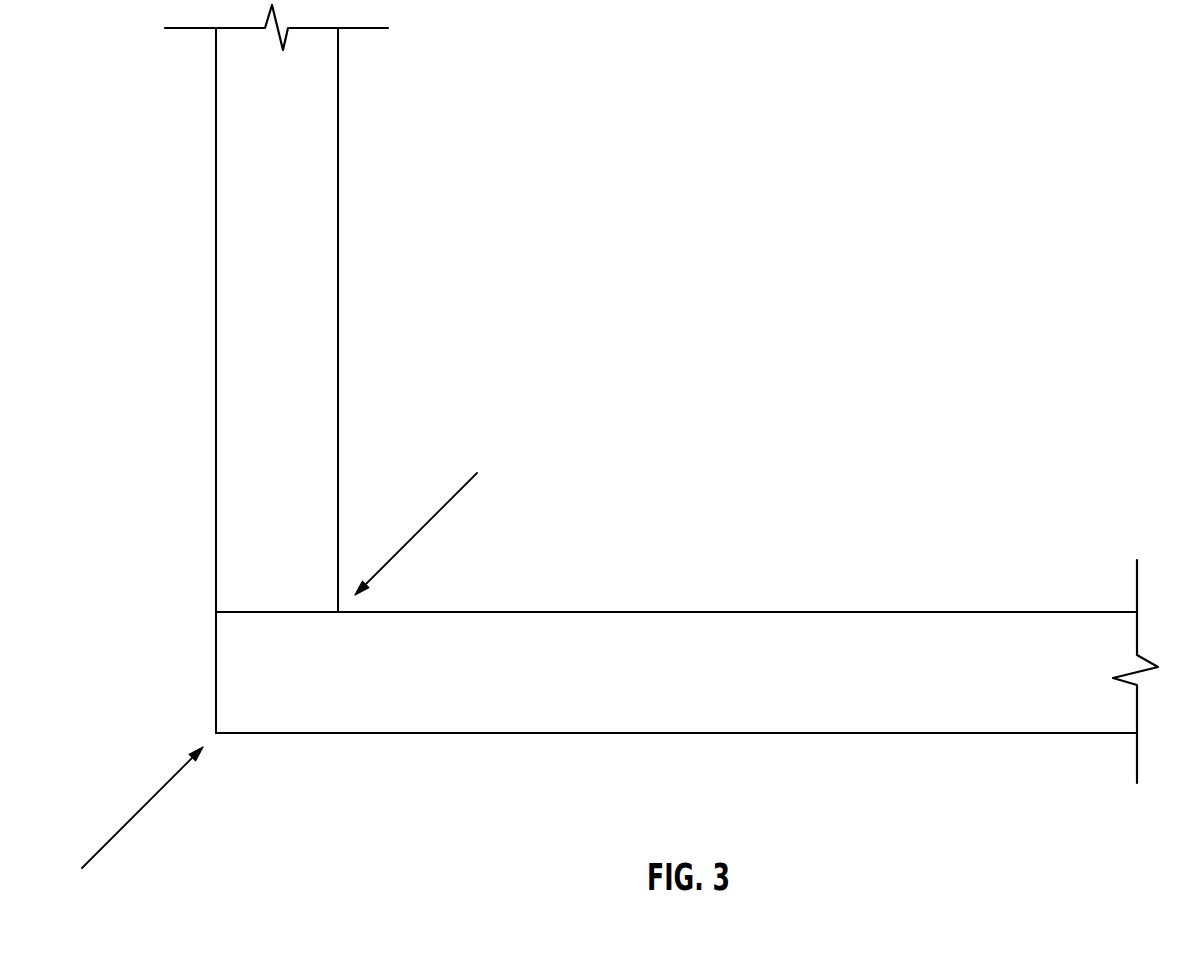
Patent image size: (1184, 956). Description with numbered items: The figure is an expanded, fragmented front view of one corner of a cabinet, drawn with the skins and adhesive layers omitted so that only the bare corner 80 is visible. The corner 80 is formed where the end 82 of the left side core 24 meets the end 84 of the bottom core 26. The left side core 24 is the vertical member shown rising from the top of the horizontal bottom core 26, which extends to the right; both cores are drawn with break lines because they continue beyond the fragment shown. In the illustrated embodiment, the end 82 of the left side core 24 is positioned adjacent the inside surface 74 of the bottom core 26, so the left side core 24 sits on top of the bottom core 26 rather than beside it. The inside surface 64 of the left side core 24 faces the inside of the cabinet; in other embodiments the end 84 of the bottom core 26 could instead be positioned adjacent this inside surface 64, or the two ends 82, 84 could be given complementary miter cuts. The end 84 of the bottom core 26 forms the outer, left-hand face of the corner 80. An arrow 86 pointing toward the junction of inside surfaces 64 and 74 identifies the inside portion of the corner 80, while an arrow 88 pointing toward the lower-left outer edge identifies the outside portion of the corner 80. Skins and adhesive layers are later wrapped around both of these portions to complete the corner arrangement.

The left side core 24 is at (237, 279).
The inside surface 64 is at (339, 183).
The bottom core 26 is at (812, 713).
The inside surface 74 is at (805, 612).
The end 82 is at (277, 610).
The end 84 is at (217, 672).
The corner 80 is at (185, 692).
The arrow 86 is at (415, 535).
The arrow 88 is at (142, 803).